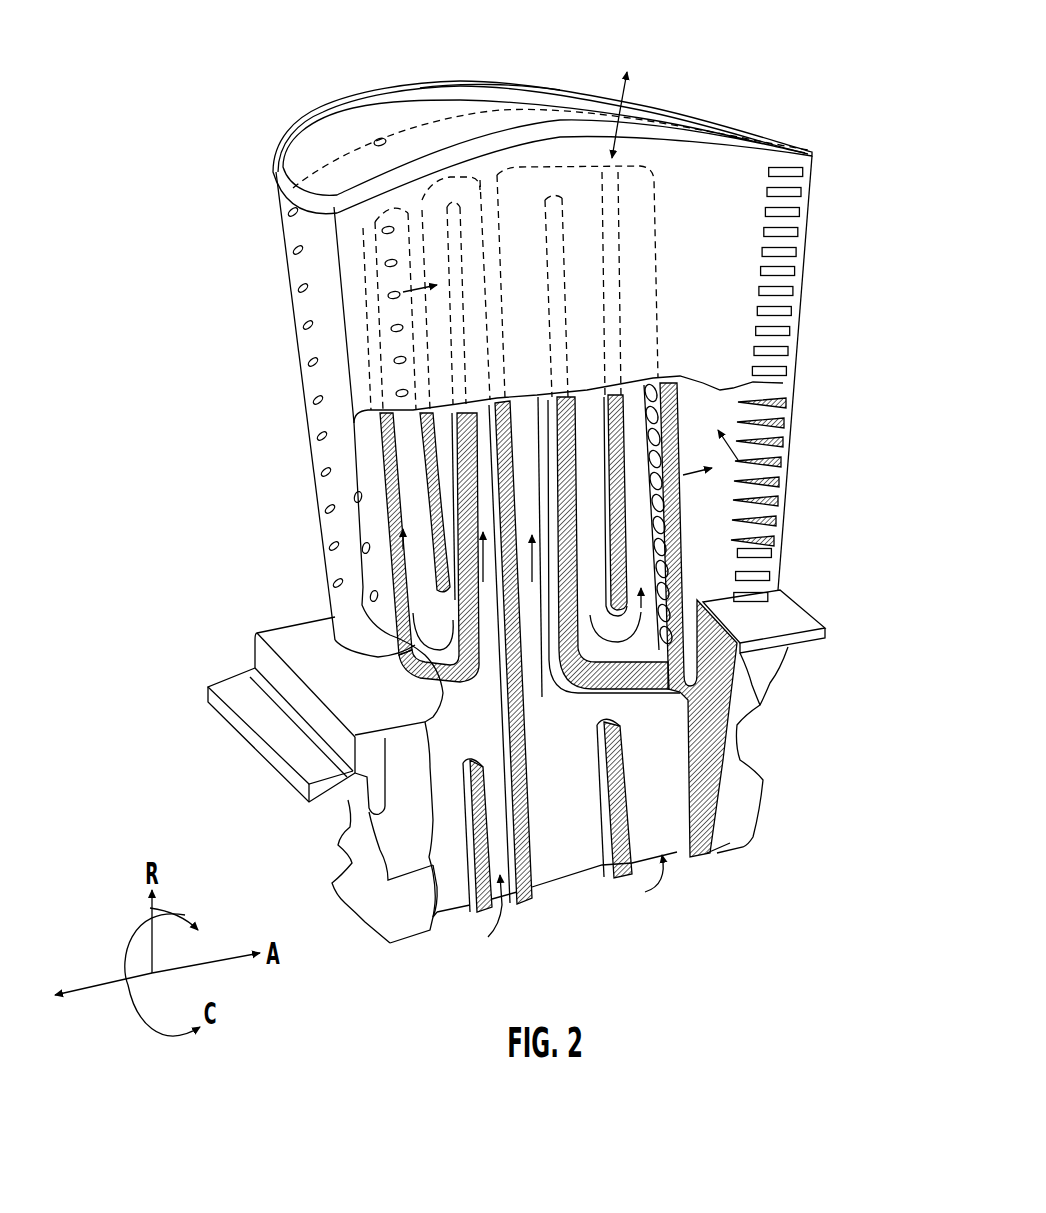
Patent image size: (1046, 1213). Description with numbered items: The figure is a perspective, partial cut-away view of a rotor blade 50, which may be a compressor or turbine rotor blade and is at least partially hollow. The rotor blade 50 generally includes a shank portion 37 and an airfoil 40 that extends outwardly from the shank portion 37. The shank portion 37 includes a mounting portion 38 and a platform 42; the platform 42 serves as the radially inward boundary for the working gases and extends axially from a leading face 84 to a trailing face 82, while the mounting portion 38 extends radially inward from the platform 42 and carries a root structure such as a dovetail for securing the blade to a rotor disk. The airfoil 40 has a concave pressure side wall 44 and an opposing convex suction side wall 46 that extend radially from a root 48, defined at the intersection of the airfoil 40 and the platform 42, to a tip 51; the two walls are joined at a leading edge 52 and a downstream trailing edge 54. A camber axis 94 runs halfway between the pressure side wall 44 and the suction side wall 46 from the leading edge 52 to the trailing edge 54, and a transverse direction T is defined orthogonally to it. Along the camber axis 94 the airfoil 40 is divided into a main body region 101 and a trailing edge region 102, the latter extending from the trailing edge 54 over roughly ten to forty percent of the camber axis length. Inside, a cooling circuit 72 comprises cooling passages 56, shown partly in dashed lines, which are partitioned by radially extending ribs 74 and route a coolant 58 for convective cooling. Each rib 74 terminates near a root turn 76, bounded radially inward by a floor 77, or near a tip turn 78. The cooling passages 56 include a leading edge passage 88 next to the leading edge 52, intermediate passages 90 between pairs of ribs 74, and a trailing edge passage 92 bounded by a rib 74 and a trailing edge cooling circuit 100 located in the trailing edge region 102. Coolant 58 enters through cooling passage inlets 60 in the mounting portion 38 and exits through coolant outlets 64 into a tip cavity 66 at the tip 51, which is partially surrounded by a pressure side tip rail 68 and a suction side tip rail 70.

The shank portion 37 is at (886, 630).
The mounting portion 38 is at (348, 873).
The airfoil 40 is at (863, 153).
The platform 42 is at (292, 652).
The pressure side wall 44 is at (694, 263).
The suction side wall 46 is at (665, 107).
The root 48 is at (755, 617).
The rotor blade 50 is at (183, 231).
The tip 51 is at (480, 80).
The leading edge 52 is at (320, 447).
The trailing edge 54 is at (783, 383).
The cooling passages 56 is at (459, 742).
The coolant 58 is at (567, 855).
The cooling passage inlets 60 is at (450, 917).
The coolant outlets 64 is at (403, 108).
The tip cavity 66 is at (350, 125).
The pressure side tip rail 68 is at (417, 180).
The suction side tip rail 70 is at (432, 88).
The cooling circuit 72 is at (402, 573).
The ribs 74 is at (460, 473).
The root turn 76 is at (628, 655).
The floor 77 is at (612, 665).
The tip turn 78 is at (557, 183).
The trailing face 82 is at (805, 600).
The leading face 84 is at (283, 692).
The leading edge passage 88 is at (402, 537).
The intermediate passages 90 is at (530, 437).
The trailing edge passage 92 is at (737, 462).
The camber axis 94 is at (512, 100).
The trailing edge cooling circuit 100 is at (753, 503).
The main body region 101 is at (357, 77).
The trailing edge region 102 is at (732, 124).
The transverse direction T is at (635, 130).